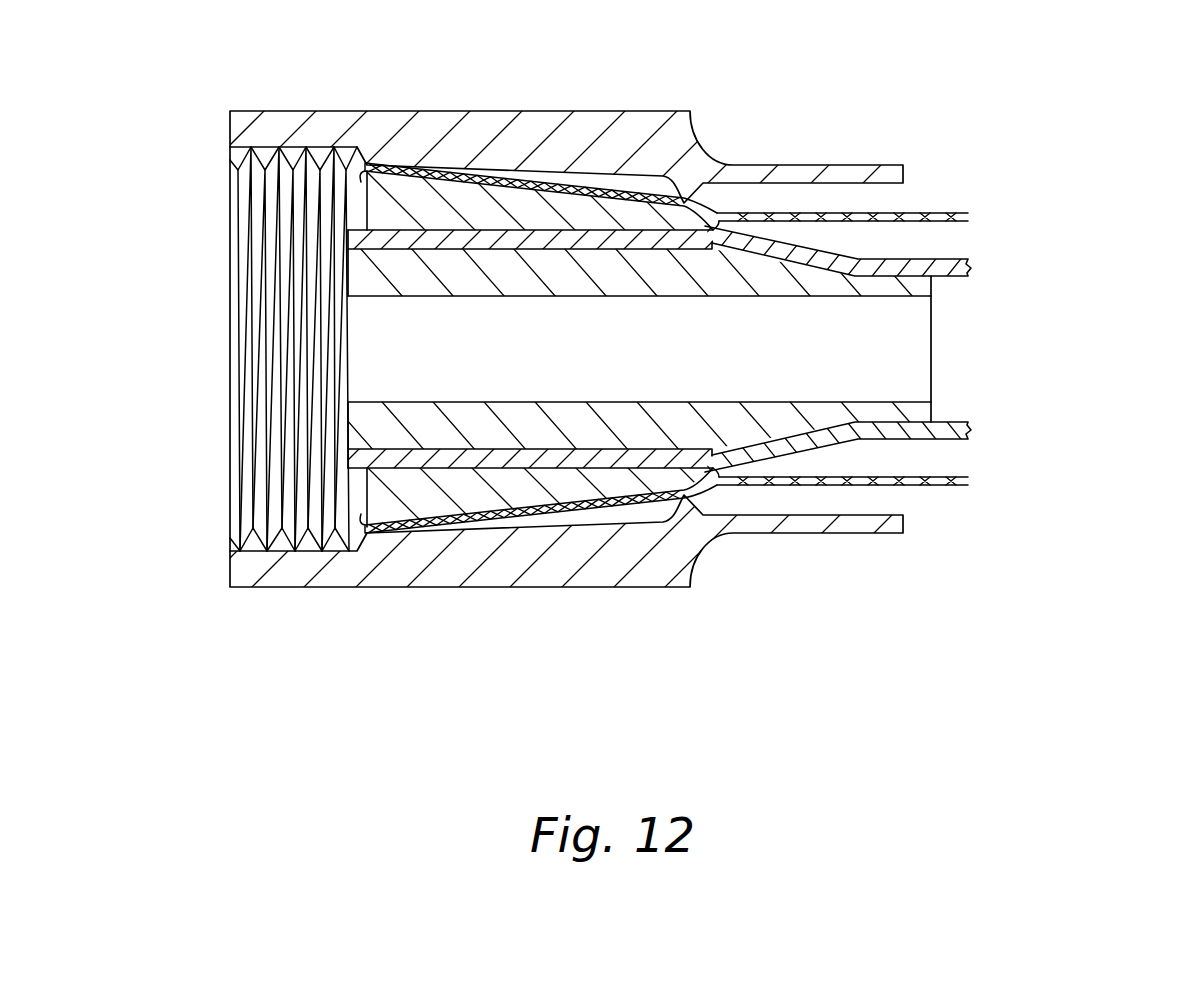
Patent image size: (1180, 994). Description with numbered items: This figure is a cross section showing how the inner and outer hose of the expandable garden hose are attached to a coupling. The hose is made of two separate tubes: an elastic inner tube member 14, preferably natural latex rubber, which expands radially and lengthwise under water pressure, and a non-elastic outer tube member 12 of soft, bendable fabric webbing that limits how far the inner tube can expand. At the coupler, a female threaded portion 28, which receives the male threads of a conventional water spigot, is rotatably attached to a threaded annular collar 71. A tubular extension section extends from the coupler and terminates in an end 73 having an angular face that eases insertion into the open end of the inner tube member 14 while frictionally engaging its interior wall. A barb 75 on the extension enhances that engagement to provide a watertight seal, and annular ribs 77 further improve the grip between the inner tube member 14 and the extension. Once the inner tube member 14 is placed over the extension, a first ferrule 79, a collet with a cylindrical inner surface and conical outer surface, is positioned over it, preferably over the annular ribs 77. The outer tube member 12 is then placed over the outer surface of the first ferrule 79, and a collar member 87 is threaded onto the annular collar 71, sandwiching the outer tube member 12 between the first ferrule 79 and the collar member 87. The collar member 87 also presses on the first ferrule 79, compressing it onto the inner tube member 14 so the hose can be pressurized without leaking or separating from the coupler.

The outer tube member 12 is at (942, 487).
The inner tube member 14 is at (962, 436).
The female threaded portion 28 is at (905, 348).
The annular collar 71 is at (242, 207).
The end 73 is at (931, 289).
The barb 75 is at (753, 224).
The annular ribs 77 is at (529, 247).
The first ferrule 79 is at (588, 215).
The collar member 87 is at (537, 122).